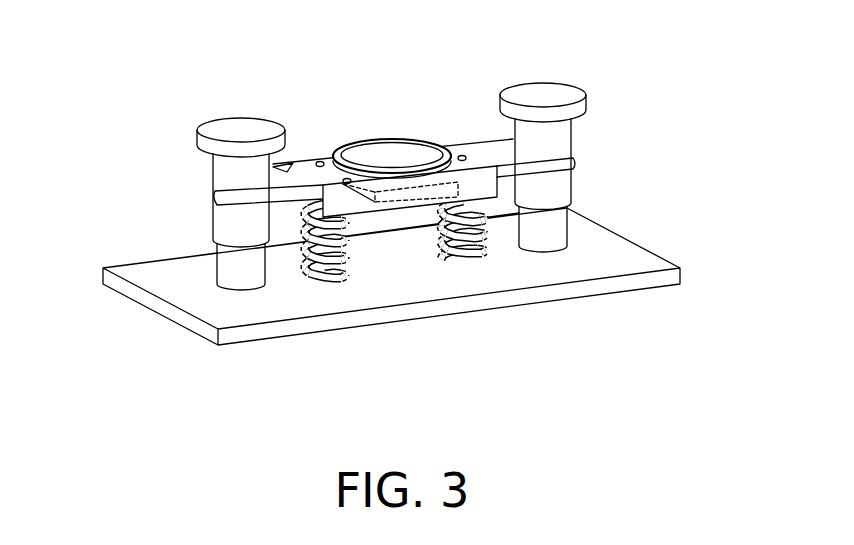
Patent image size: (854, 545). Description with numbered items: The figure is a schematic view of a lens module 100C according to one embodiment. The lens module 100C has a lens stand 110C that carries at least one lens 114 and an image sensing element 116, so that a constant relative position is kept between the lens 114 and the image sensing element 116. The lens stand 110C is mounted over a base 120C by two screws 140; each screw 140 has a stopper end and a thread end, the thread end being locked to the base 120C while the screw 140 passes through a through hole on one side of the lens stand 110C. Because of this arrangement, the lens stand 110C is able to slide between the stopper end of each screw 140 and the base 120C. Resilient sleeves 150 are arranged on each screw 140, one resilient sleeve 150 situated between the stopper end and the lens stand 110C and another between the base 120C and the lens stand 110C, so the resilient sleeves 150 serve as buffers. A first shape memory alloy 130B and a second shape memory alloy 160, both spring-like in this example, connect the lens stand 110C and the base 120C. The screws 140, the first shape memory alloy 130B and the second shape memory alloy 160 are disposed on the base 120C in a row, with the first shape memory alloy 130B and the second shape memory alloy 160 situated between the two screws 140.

The lens module 100C is at (413, 226).
The lens stand 110C is at (312, 168).
The lens 114 is at (397, 157).
The image sensing element 116 is at (465, 181).
The base 120C is at (577, 267).
The first shape memory alloy 130B is at (340, 277).
The screw 140 is at (576, 95).
The resilient sleeve 150 is at (562, 138).
The second shape memory alloy 160 is at (470, 252).